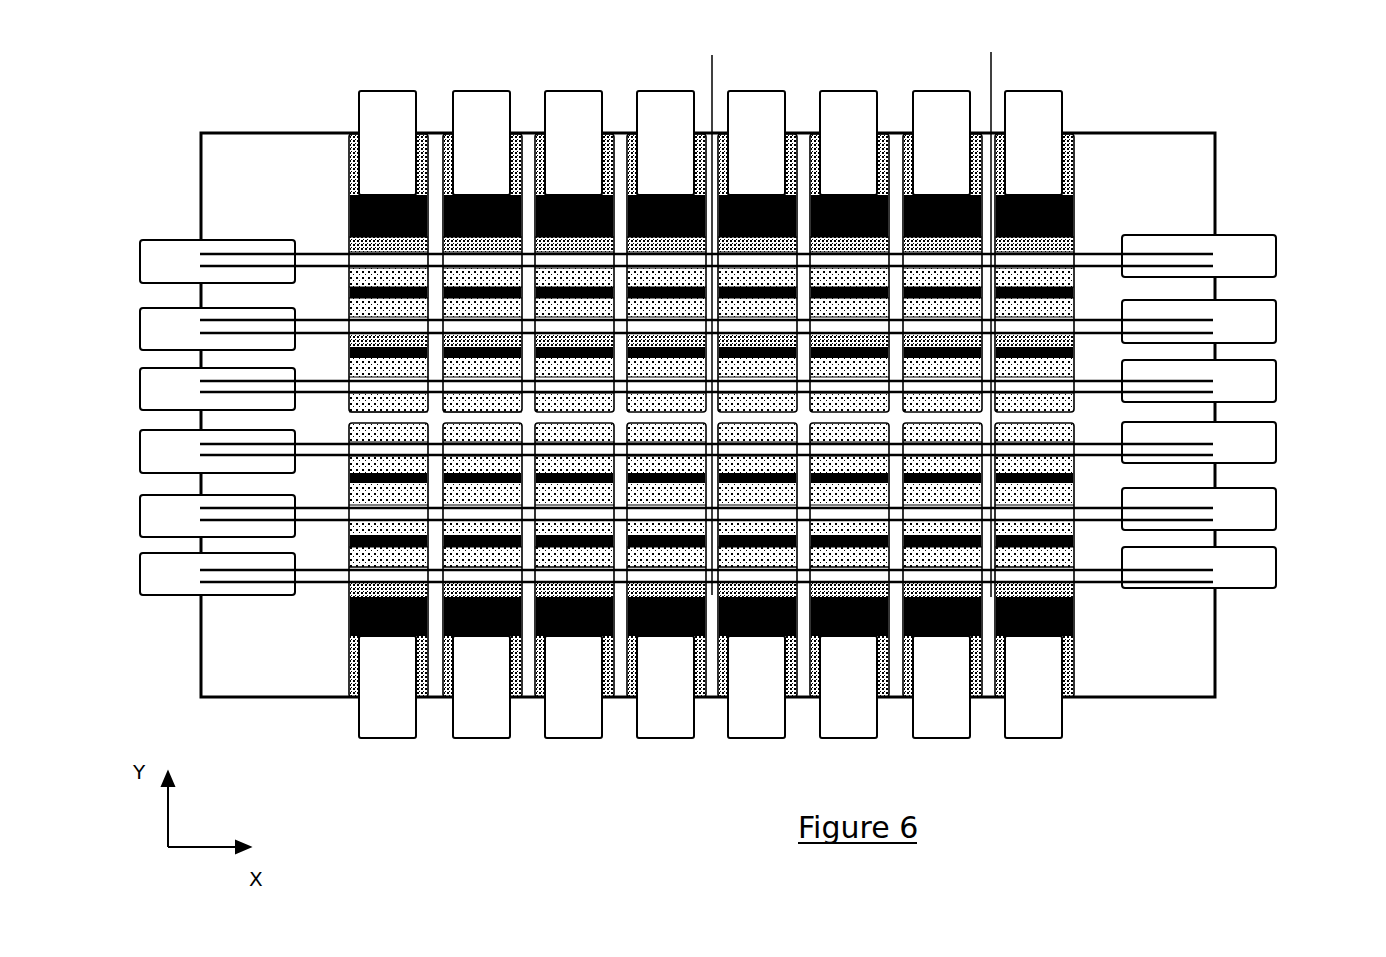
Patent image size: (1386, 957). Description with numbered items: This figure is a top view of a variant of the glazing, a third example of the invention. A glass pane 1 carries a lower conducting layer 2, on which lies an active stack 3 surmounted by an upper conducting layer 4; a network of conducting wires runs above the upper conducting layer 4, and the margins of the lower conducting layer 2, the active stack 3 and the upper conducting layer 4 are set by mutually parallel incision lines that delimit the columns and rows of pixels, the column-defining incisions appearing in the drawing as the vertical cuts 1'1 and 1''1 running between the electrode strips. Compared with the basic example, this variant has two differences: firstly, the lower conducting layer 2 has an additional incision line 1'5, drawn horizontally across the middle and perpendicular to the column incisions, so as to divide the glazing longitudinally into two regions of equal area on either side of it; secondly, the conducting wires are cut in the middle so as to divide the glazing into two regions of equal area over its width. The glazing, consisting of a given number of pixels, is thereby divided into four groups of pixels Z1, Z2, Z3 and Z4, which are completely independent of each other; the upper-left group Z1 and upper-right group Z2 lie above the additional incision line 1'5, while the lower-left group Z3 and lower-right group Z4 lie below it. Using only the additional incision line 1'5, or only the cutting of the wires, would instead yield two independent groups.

The glass pane 1 is at (763, 415).
The lower conducting layer 2 is at (1077, 198).
The active stack 3 is at (734, 236).
The upper conducting layer 4 is at (1077, 236).
The first group of pixels Z1 is at (202, 293).
The second group of pixels Z2 is at (1065, 303).
The third group of pixels Z3 is at (363, 556).
The fourth group of pixels Z4 is at (1052, 553).
The section line 1'1 is at (996, 313).
The section line 1''1 is at (720, 314).
The separation line 1'5 is at (858, 411).